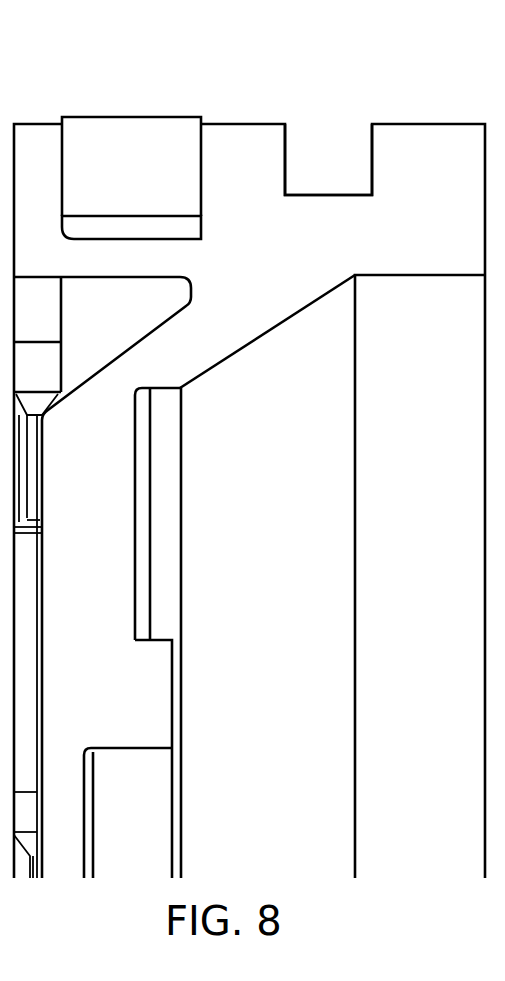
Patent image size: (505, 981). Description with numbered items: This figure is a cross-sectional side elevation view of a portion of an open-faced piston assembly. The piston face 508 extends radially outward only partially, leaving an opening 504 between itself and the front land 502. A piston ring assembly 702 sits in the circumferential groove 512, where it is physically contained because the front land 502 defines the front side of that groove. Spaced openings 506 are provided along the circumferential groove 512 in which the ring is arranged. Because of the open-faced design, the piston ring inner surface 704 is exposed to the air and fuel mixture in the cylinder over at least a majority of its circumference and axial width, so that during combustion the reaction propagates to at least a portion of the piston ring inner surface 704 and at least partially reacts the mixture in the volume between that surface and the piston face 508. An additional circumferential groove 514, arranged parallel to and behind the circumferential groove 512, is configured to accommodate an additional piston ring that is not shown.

The front land 502 is at (33, 155).
The opening 504 is at (27, 318).
The spaced openings 506 is at (150, 300).
The piston face 508 is at (90, 700).
The circumferential groove 512 is at (176, 142).
The additional circumferential groove 514 is at (325, 150).
The piston ring assembly 702 is at (122, 170).
The piston ring inner surface 704 is at (108, 220).